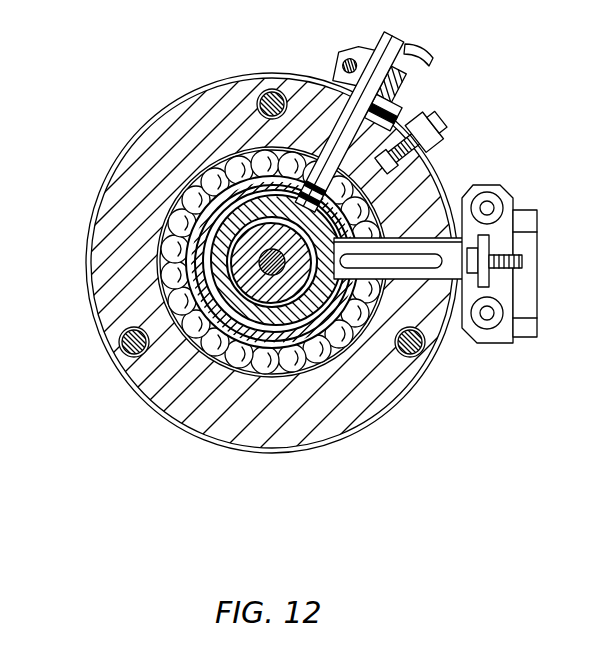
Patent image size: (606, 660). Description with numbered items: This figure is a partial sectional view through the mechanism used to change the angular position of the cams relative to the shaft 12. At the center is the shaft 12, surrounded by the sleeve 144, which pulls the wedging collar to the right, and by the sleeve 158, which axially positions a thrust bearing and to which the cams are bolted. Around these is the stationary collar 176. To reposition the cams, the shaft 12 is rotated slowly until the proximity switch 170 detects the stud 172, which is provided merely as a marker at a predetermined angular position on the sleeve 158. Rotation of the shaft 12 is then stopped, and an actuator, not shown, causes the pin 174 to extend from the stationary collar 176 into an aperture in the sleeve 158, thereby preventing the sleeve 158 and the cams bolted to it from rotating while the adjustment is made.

The shaft 12 is at (208, 213).
The sleeve 144 is at (235, 265).
The sleeve 158 is at (221, 318).
The proximity switch 170 is at (404, 38).
The stud 172 is at (312, 198).
The pin 174 is at (437, 280).
The stationary collar 176 is at (313, 423).